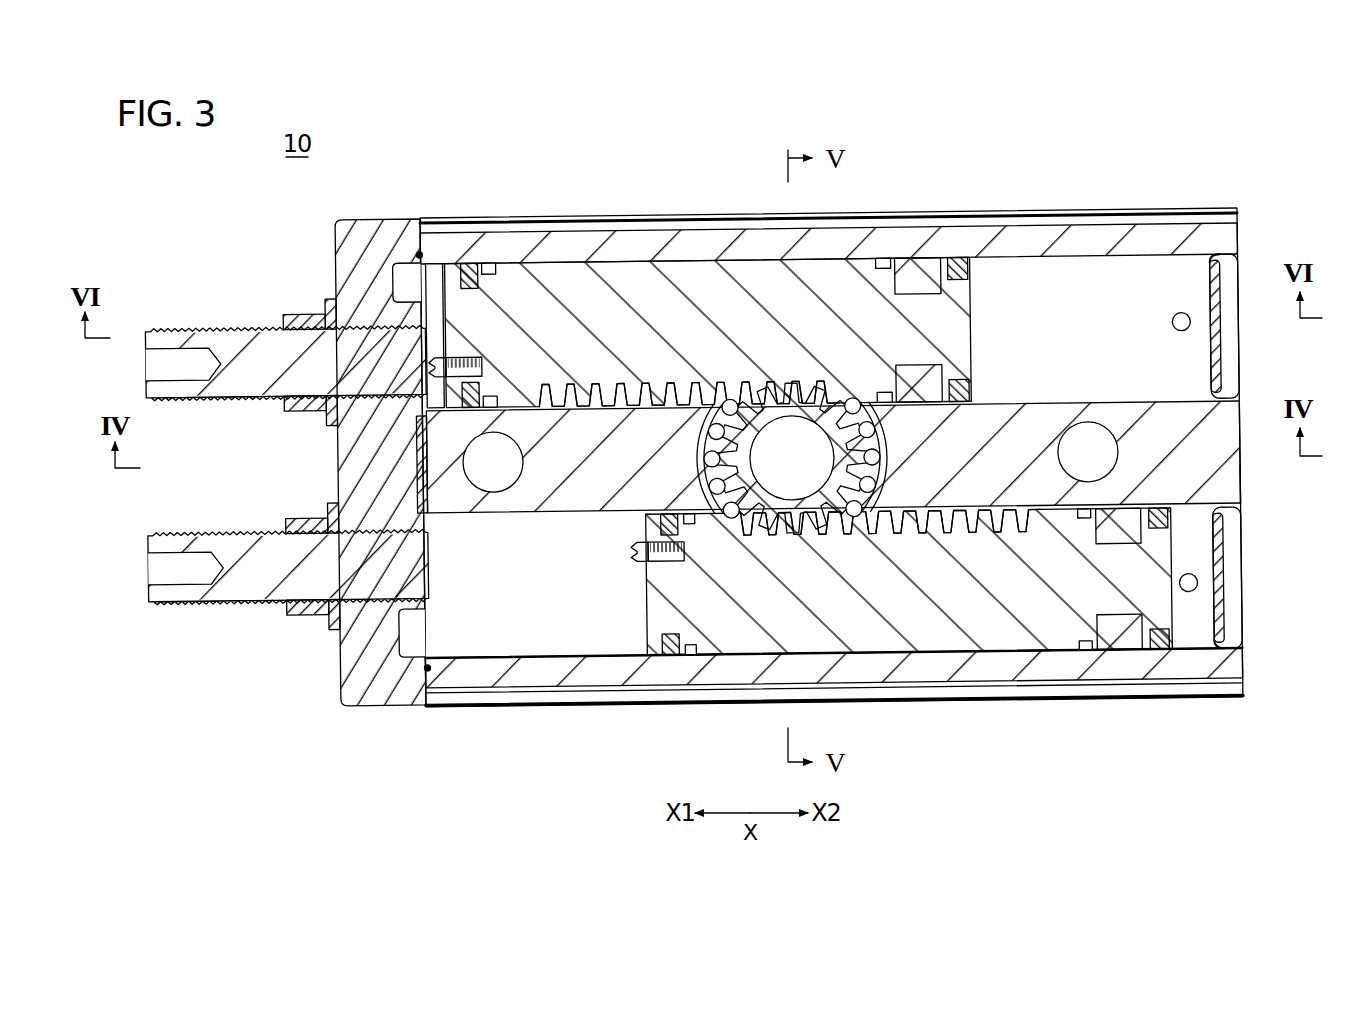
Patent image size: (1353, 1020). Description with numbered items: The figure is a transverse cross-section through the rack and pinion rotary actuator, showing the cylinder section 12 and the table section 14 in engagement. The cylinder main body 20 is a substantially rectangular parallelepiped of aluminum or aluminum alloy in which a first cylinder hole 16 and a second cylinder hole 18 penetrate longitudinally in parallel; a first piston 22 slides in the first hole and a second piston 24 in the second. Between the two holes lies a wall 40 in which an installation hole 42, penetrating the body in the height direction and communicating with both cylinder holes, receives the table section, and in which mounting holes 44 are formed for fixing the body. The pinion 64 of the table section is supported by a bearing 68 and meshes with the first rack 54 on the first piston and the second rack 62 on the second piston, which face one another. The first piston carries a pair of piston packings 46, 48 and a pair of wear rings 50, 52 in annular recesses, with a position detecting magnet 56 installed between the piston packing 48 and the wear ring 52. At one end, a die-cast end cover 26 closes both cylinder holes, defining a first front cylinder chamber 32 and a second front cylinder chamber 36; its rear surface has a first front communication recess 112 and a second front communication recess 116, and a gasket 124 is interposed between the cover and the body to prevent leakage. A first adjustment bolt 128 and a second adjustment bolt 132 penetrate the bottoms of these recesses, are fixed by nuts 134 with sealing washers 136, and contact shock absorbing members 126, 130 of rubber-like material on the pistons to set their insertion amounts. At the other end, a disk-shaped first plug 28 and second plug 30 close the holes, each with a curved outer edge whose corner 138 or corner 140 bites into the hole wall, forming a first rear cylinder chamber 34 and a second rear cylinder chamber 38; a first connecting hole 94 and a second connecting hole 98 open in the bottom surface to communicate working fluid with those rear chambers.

The cylinder section 12 is at (1190, 209).
The table section 14 is at (893, 447).
The first cylinder hole 16 is at (1132, 264).
The second cylinder hole 18 is at (463, 646).
The cylinder main body 20 is at (914, 691).
The first piston 22 is at (976, 338).
The second piston 24 is at (650, 598).
The end cover 26 is at (397, 220).
The first plug 28 is at (1206, 370).
The second plug 30 is at (1224, 620).
The first front cylinder chamber 32 is at (438, 265).
The first rear cylinder chamber 34 is at (1080, 278).
The second front cylinder chamber 36 is at (533, 686).
The second rear cylinder chamber 38 is at (1188, 658).
The wall 40 is at (1232, 492).
The installation hole 42 is at (735, 519).
The mounting holes 44 is at (525, 459).
The piston packing 46 is at (472, 259).
The piston packing 48 is at (961, 264).
The wear ring 50 is at (493, 259).
The wear ring 52 is at (886, 261).
The first rack 54 is at (660, 398).
The position detecting magnet 56 is at (921, 263).
The second rack 62 is at (985, 512).
The pinion 64 is at (888, 486).
The bearing 68 is at (716, 454).
The first connecting hole 94 is at (1174, 326).
The second connecting hole 98 is at (1197, 587).
The first front communication recess 112 is at (422, 246).
The second front communication recess 116 is at (409, 645).
The gasket 124 is at (427, 505).
The shock absorbing member 126 is at (432, 355).
The first adjustment bolt 128 is at (172, 318).
The shock absorbing member 130 is at (630, 551).
The second adjustment bolt 132 is at (175, 524).
The nuts 134 is at (302, 307).
The sealing washers 136 is at (332, 293).
The corner 138 is at (1235, 254).
The corner 140 is at (1230, 656).